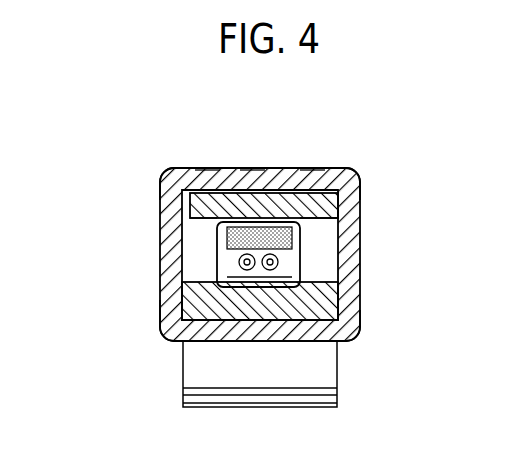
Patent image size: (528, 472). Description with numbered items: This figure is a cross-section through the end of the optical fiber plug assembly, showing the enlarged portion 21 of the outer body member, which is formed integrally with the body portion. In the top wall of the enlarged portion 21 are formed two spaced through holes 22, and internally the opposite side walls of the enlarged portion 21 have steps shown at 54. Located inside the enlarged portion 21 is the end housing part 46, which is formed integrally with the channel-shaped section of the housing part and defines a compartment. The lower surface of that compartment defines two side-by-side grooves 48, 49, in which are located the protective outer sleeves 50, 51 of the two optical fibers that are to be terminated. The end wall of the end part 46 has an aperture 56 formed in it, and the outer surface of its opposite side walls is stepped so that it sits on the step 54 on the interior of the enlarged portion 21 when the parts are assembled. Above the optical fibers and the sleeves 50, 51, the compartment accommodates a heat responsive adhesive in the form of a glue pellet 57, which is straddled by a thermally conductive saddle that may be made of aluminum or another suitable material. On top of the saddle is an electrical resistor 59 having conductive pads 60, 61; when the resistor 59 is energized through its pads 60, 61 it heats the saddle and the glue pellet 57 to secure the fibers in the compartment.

The enlarged portion 21 is at (375, 196).
The through holes 22 is at (207, 168).
The end housing part 46 is at (185, 210).
The groove 48 is at (200, 268).
The groove 49 is at (325, 282).
The protective outer sleeve 50 is at (160, 322).
The protective outer sleeve 51 is at (350, 337).
The step 54 is at (355, 317).
The aperture 56 is at (182, 237).
The glue pellet 57 is at (282, 168).
The electrical resistor 59 is at (250, 168).
The conductive pad 60 is at (200, 168).
The conductive pad 61 is at (325, 168).